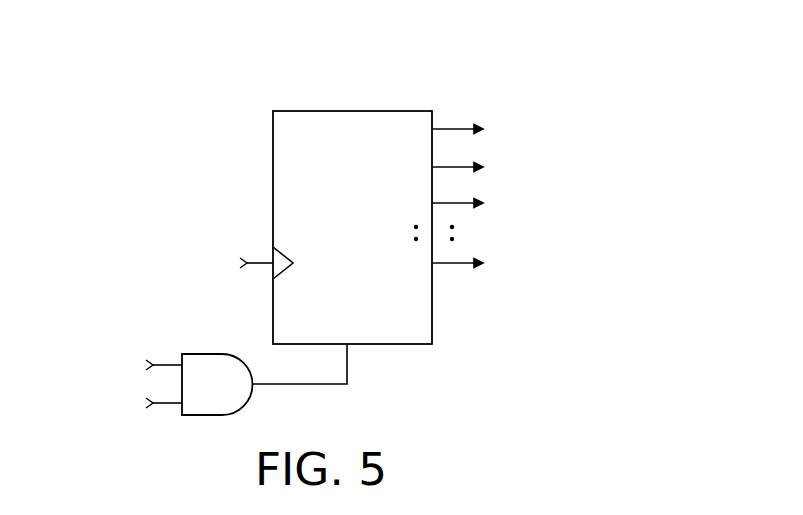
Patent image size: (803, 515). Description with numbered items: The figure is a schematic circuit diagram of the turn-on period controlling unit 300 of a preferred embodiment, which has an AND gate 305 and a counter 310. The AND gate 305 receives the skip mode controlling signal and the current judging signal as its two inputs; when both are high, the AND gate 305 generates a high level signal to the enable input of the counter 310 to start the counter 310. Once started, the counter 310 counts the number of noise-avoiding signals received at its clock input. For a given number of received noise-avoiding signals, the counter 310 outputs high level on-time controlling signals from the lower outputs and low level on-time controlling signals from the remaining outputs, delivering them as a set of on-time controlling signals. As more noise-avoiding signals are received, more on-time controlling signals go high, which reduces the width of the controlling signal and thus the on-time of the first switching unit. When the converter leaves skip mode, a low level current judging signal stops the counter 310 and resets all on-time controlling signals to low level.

The turn-on period controlling unit 300 is at (724, 44).
The counter 310 is at (346, 112).
The AND gate 305 is at (246, 389).